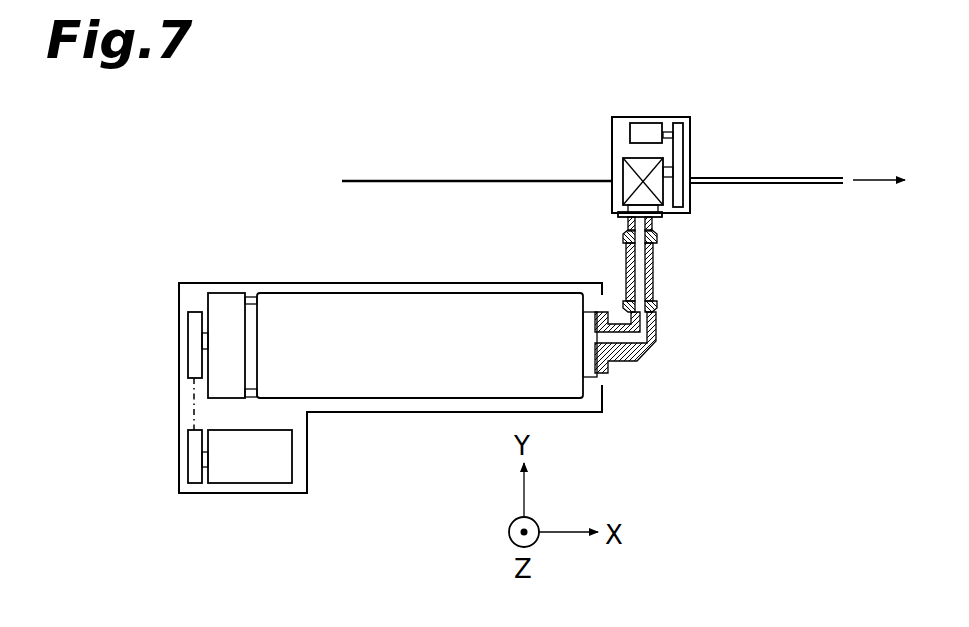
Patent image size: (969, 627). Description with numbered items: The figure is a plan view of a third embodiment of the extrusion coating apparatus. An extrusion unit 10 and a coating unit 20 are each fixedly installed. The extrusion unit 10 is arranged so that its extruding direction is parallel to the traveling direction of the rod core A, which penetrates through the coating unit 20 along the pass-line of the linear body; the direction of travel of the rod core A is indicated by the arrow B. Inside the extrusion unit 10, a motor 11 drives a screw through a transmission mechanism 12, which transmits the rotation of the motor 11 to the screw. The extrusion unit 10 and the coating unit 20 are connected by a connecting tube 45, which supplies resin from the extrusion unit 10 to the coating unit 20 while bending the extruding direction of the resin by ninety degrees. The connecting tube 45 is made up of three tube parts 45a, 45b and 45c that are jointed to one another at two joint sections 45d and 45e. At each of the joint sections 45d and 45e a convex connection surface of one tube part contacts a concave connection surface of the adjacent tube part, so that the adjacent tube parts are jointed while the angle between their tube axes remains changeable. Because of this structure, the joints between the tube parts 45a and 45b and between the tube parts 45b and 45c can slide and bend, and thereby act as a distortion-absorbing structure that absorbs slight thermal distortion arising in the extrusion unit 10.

The extrusion unit 10 is at (360, 390).
The motor 11 is at (257, 478).
The transmission mechanism 12 is at (194, 414).
The coating unit 20 is at (643, 117).
The connecting tube 45 is at (695, 293).
The tube part 45a is at (655, 223).
The tube part 45b is at (654, 276).
The tube part 45c is at (660, 344).
The joint section 45d is at (657, 244).
The joint section 45e is at (657, 306).
The rod core A is at (474, 181).
The conveying direction B is at (786, 176).